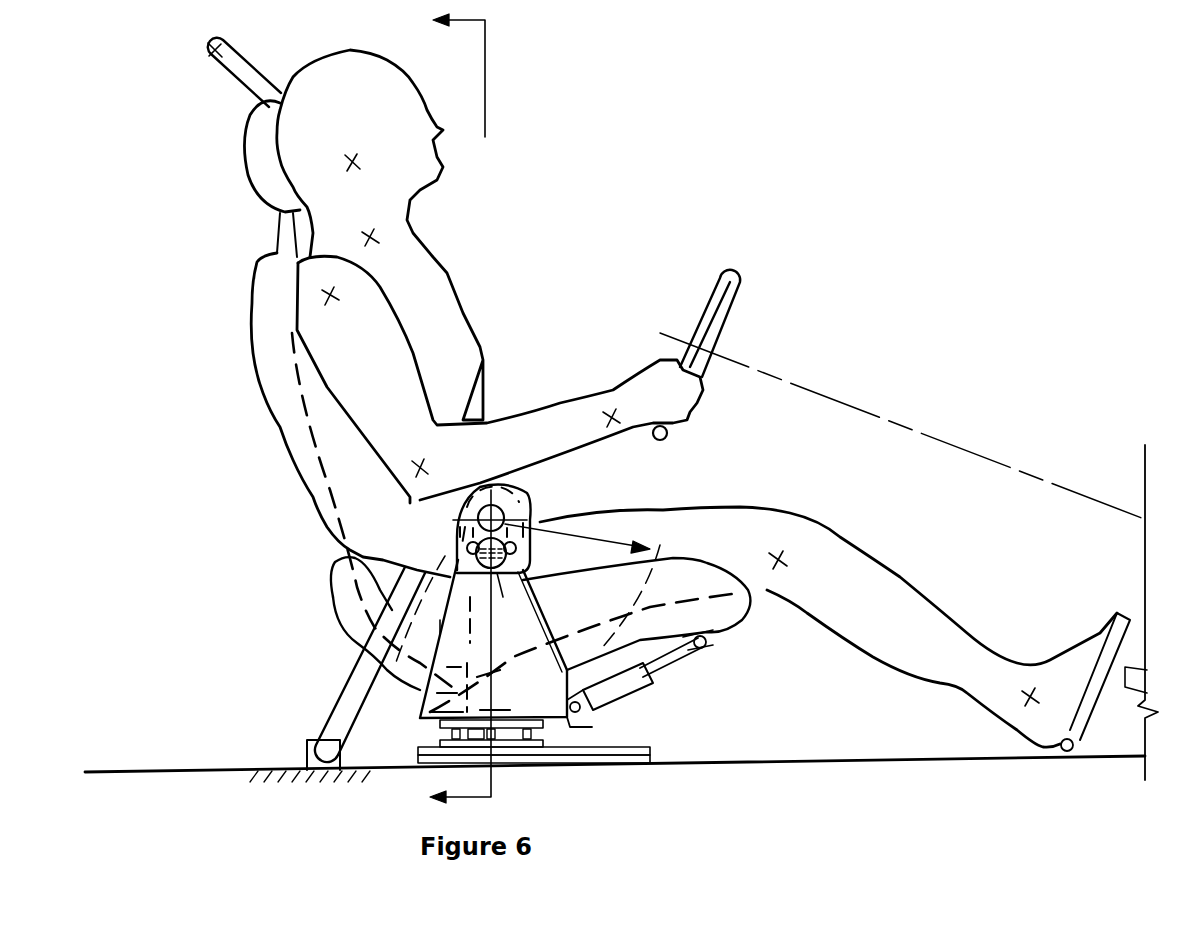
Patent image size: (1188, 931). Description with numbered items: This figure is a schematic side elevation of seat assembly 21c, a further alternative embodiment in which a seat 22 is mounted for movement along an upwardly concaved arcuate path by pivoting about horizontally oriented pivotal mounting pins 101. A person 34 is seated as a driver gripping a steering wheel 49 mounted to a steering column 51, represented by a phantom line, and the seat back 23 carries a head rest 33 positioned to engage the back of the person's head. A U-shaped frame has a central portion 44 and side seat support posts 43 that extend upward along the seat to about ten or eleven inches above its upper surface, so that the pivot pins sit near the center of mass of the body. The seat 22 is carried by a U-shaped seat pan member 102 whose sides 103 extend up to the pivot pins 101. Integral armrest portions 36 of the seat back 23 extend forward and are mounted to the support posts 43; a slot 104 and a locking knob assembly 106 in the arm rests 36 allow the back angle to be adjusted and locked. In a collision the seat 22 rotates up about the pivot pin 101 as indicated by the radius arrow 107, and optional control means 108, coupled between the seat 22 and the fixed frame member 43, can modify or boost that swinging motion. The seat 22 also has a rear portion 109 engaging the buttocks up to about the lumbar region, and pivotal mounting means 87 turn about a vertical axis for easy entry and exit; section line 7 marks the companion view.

The section line 7 is at (451, 410).
The head rest 33 is at (263, 155).
The person 34 is at (437, 298).
The steering wheel 49 is at (730, 308).
The steering column 51 is at (990, 462).
The seat back 23 is at (294, 446).
The seat assembly 21c is at (268, 510).
The pivotal mounting pins 101 is at (503, 513).
The radius arrow 107 is at (610, 527).
The slot 104 is at (460, 547).
The armrest portions 36 is at (400, 553).
The seat 22 is at (700, 581).
The rear portion 109 is at (333, 590).
The side seat support posts 43 is at (440, 627).
The locking knob assembly 106 is at (508, 596).
The sides of seat pan member 103 is at (550, 633).
The central portion of frame 44 is at (353, 697).
The control means 108 is at (650, 683).
The seat pan member 102 is at (592, 727).
The pivotal mounting means 87 is at (540, 742).